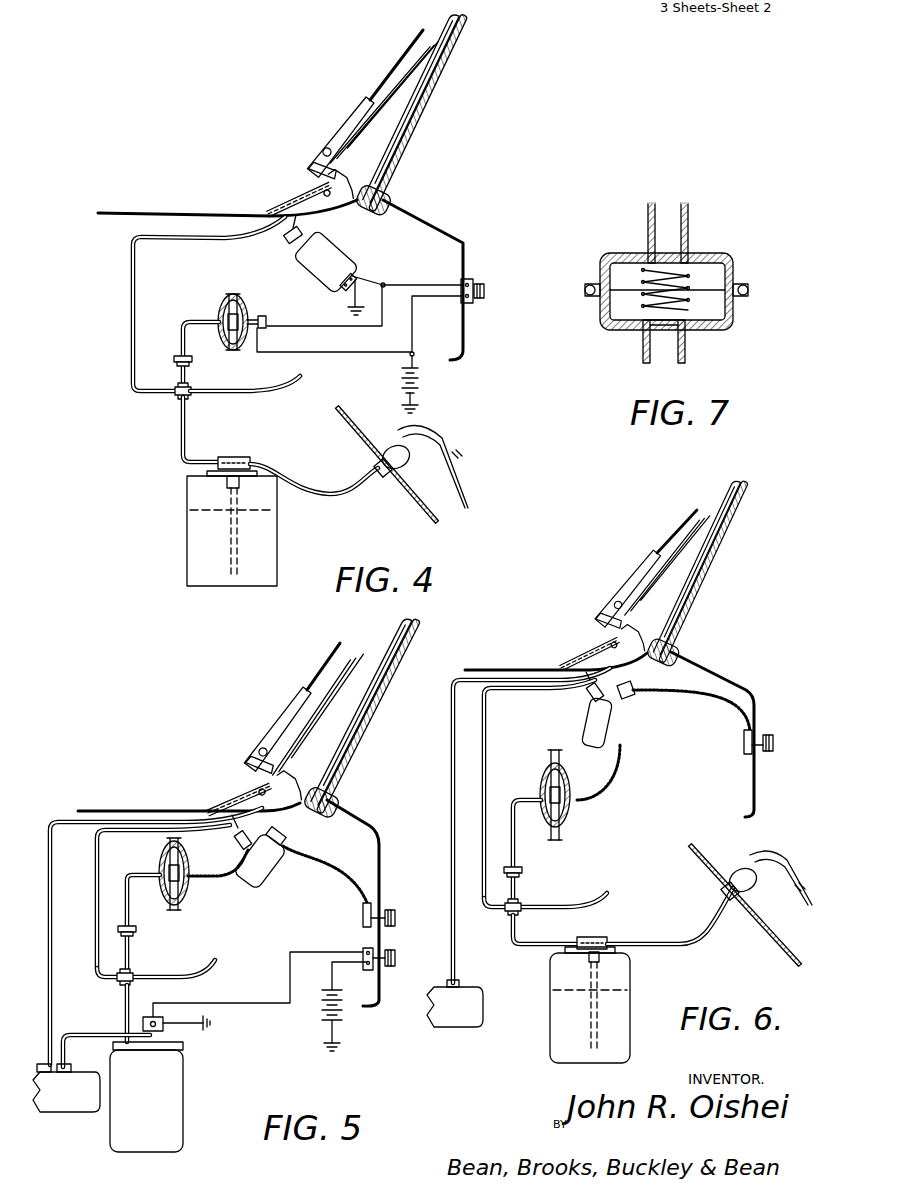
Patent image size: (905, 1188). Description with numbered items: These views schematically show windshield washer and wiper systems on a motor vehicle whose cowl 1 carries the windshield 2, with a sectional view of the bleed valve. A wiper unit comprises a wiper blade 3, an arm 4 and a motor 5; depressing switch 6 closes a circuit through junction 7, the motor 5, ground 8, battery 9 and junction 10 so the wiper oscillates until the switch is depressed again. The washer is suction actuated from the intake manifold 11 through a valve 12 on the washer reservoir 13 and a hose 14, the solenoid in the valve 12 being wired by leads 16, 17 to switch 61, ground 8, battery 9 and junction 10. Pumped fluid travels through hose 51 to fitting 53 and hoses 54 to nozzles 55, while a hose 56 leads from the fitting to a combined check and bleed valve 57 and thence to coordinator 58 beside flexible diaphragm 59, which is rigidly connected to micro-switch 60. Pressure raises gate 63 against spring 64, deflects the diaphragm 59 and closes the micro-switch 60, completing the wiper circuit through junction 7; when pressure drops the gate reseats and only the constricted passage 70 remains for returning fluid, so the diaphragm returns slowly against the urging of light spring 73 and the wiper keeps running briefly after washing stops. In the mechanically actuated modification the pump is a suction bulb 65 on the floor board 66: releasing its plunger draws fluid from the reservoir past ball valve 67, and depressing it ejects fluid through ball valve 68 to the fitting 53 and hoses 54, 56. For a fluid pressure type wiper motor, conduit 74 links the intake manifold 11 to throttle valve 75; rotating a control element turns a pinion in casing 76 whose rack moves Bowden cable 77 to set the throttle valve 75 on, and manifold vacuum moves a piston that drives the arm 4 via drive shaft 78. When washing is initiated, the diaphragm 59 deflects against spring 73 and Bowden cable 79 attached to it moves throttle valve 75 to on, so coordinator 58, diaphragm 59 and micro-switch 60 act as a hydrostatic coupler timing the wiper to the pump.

In FIG. 4, the cowl 1 is at (172, 214).
In FIG. 5, the cowl 1 is at (150, 808).
In FIG. 6, the cowl 1 is at (517, 665).
In FIG. 4, the windshield 2 is at (385, 188).
In FIG. 5, the windshield 2 is at (344, 762).
In FIG. 6, the windshield 2 is at (703, 585).
In FIG. 4, the wiper blade 3 is at (388, 147).
In FIG. 5, the wiper blade 3 is at (398, 636).
In FIG. 6, the wiper blade 3 is at (740, 492).
In FIG. 4, the arm 4 is at (345, 132).
In FIG. 5, the arm 4 is at (285, 725).
In FIG. 6, the arm 4 is at (635, 585).
In FIG. 4, the electric motor 5 is at (328, 248).
In FIG. 4, the switch 6 is at (485, 291).
In FIG. 4, the junction 7 is at (384, 282).
In FIG. 4, the ground 8 is at (350, 312).
In FIG. 5, the ground 8 is at (212, 1025).
In FIG. 4, the battery 9 is at (421, 385).
In FIG. 5, the battery 9 is at (320, 1010).
In FIG. 4, the junction 10 is at (419, 352).
In FIG. 5, the intake manifold 11 is at (80, 1105).
In FIG. 6, the intake manifold 11 is at (463, 1018).
In FIG. 5, the valve 12 is at (148, 1018).
In FIG. 5, the washer reservoir 13 is at (175, 1127).
In FIG. 5, the hose 14 is at (108, 1025).
In FIG. 5, the lead 16 is at (255, 1003).
In FIG. 5, the lead 17 is at (188, 1025).
In FIG. 5, the hose 51 is at (122, 995).
In FIG. 4, the fitting 53 is at (180, 397).
In FIG. 5, the fitting 53 is at (133, 977).
In FIG. 6, the fitting 53 is at (520, 908).
In FIG. 4, the hoses 54 is at (240, 396).
In FIG. 5, the hoses 54 is at (95, 920).
In FIG. 6, the hoses 54 is at (485, 893).
In FIG. 4, the nozzle 55 is at (325, 194).
In FIG. 5, the nozzle 55 is at (260, 782).
In FIG. 6, the nozzle 55 is at (610, 643).
In FIG. 5, the hose 56 is at (135, 933).
In FIG. 6, the hose 56 is at (521, 872).
In FIG. 4, the combined check and bleed valve 57 is at (176, 360).
In FIG. 7, the combined check and bleed valve 57 is at (624, 243).
In FIG. 5, the combined check and bleed valve 57 is at (125, 925).
In FIG. 6, the combined check and bleed valve 57 is at (512, 862).
In FIG. 4, the coordinator 58 is at (230, 289).
In FIG. 5, the coordinator 58 is at (162, 862).
In FIG. 6, the coordinator 58 is at (540, 775).
In FIG. 4, the flexible diaphragm 59 is at (240, 312).
In FIG. 5, the flexible diaphragm 59 is at (184, 866).
In FIG. 6, the flexible diaphragm 59 is at (567, 789).
In FIG. 4, the micro-switch 60 is at (266, 320).
In FIG. 5, the switch 61 is at (395, 955).
In FIG. 7, the gate 63 is at (635, 333).
In FIG. 7, the spring 64 is at (690, 276).
In FIG. 4, the suction bulb 65 is at (386, 447).
In FIG. 6, the suction bulb 65 is at (744, 872).
In FIG. 4, the floor board 66 is at (418, 498).
In FIG. 6, the floor board 66 is at (772, 930).
In FIG. 4, the ball valve 67 is at (238, 478).
In FIG. 6, the ball valve 67 is at (590, 962).
In FIG. 4, the ball valve 68 is at (222, 460).
In FIG. 6, the ball valve 68 is at (588, 942).
In FIG. 7, the constricted passage 70 is at (692, 332).
In FIG. 4, the light spring 73 is at (243, 346).
In FIG. 5, the light spring 73 is at (188, 897).
In FIG. 6, the light spring 73 is at (568, 820).
In FIG. 5, the conduit 74 is at (54, 888).
In FIG. 6, the conduit 74 is at (459, 787).
In FIG. 5, the throttle valve 75 is at (285, 838).
In FIG. 6, the throttle valve 75 is at (633, 686).
In FIG. 5, the casing 76 is at (362, 918).
In FIG. 6, the casing 76 is at (742, 742).
In FIG. 5, the Bowden cable 77 is at (330, 866).
In FIG. 6, the Bowden cable 77 is at (713, 702).
In FIG. 5, the drive shaft 78 is at (242, 850).
In FIG. 6, the drive shaft 78 is at (590, 698).
In FIG. 5, the Bowden cable 79 is at (228, 880).
In FIG. 6, the Bowden cable 79 is at (620, 768).